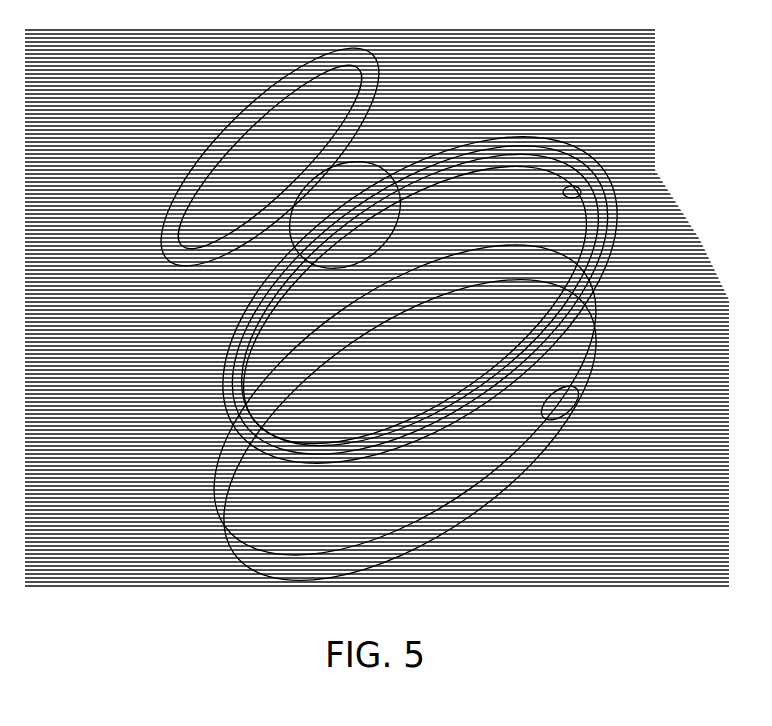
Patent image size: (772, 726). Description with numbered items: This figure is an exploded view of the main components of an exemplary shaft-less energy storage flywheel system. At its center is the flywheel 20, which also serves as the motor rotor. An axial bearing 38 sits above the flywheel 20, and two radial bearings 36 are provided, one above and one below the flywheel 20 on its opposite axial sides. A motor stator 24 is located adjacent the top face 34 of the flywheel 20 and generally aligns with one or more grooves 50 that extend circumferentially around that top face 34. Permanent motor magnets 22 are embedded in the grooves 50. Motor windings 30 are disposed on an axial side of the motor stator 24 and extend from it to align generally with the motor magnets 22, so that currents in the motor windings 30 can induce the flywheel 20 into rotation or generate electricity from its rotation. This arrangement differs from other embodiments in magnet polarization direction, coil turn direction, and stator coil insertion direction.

The flywheel 20 is at (602, 217).
The motor magnets 22 is at (580, 200).
The motor stator 24 is at (195, 438).
The motor windings 30 is at (227, 487).
The top face 34 is at (600, 287).
The radial bearings 36 is at (390, 152).
The axial bearing 38 is at (158, 220).
The grooves 50 is at (568, 187).